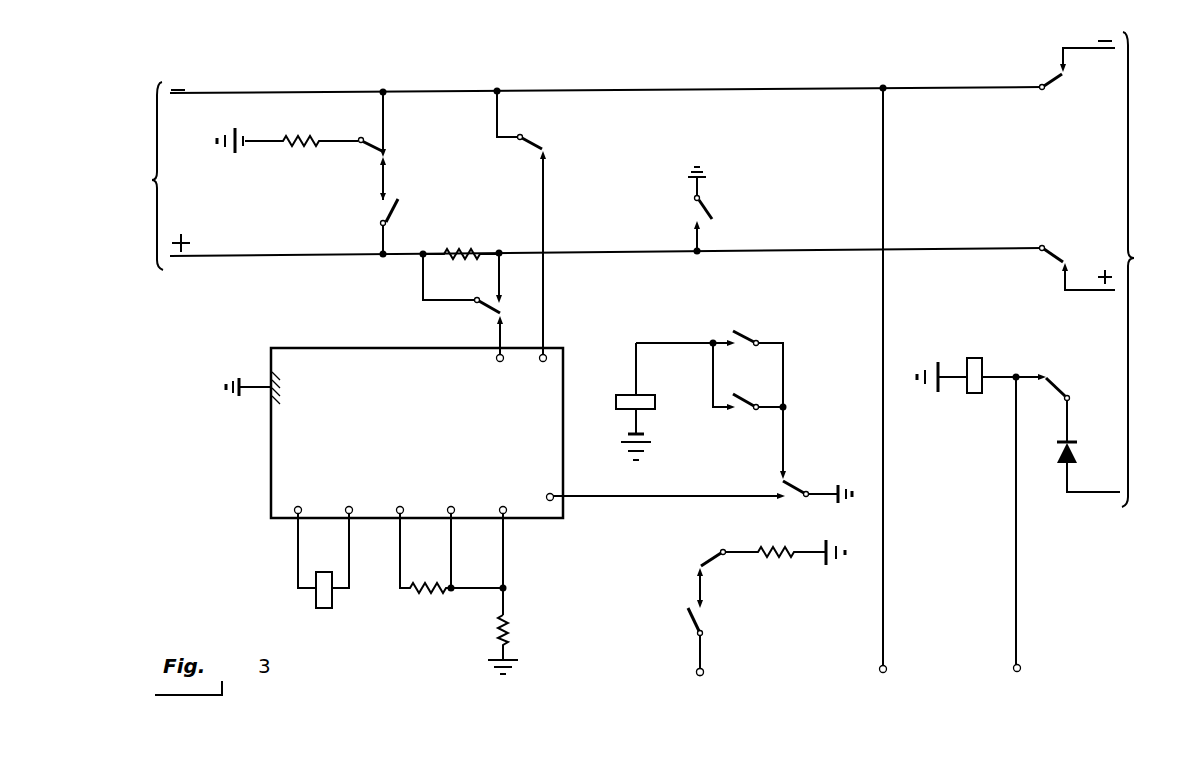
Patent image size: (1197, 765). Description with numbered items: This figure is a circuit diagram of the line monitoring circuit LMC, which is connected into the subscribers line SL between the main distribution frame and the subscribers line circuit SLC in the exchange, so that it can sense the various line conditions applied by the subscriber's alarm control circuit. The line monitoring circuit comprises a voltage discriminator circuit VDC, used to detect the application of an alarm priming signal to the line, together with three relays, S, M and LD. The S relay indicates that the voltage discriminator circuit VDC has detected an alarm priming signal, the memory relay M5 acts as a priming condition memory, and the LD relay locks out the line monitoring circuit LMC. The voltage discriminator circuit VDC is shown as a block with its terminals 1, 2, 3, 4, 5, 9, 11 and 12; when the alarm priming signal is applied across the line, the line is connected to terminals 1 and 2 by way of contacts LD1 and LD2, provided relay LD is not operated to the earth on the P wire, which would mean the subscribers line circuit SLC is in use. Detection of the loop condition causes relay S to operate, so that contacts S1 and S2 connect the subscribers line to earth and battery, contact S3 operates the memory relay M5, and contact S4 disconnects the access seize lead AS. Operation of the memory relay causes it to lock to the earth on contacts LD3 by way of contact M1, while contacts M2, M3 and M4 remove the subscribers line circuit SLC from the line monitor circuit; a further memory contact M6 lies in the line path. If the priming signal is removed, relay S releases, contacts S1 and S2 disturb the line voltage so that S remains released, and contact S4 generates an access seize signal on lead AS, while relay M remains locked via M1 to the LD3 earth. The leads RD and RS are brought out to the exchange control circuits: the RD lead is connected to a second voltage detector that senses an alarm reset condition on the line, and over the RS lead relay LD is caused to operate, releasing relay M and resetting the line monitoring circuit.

The subscribers line SL is at (577, 176).
The subscribers line circuit SLC is at (1150, 269).
The line monitoring circuit LMC is at (699, 66).
The voltage discriminator circuit VDC is at (394, 432).
The contact S1 is at (714, 211).
The contact S2 is at (316, 145).
The contact S3 is at (750, 358).
The contact S4 is at (330, 546).
The contact M1 is at (748, 376).
The contact M2 is at (1065, 65).
The contact M3 is at (1065, 268).
The contact M4 is at (1054, 403).
The memory relay M5 is at (677, 394).
The contact M6 is at (405, 225).
The contact LD1 is at (536, 222).
The contact LD2 is at (463, 304).
The contact LD3 is at (985, 334).
The RS lead RS is at (725, 462).
The RD lead RD is at (886, 393).
The access seize lead AS is at (701, 685).
The P wire P is at (1088, 467).
The terminal 1 is at (493, 359).
The terminal 2 is at (536, 359).
The terminal 3 is at (398, 498).
The terminal 4 is at (449, 498).
The terminal 5 is at (500, 498).
The terminal 9 is at (347, 498).
The terminal 11 is at (550, 485).
The terminal 12 is at (295, 498).